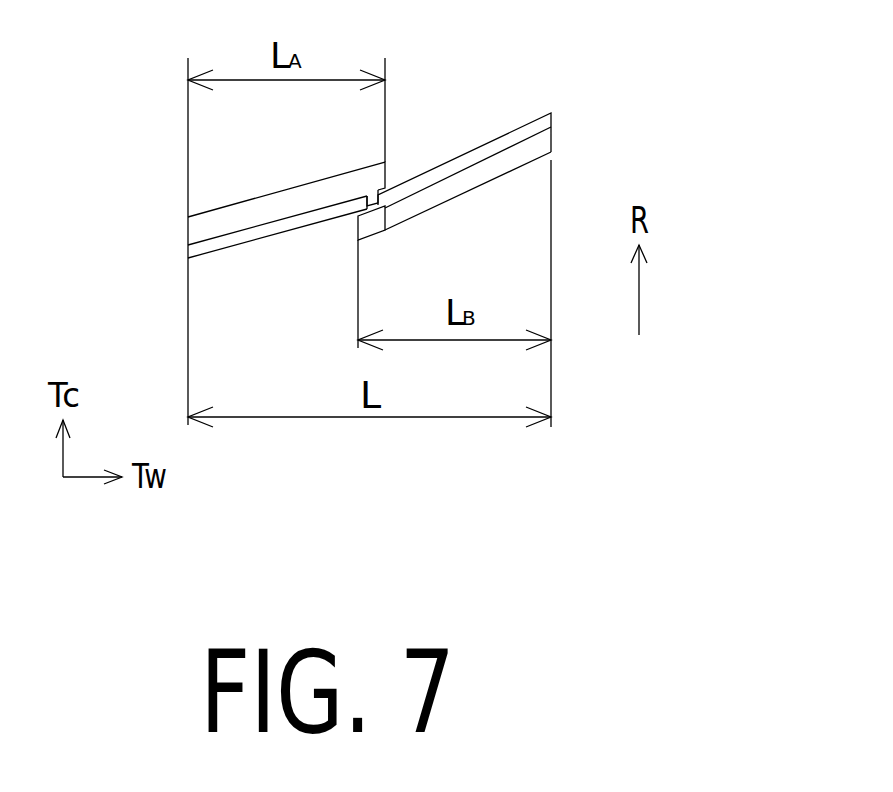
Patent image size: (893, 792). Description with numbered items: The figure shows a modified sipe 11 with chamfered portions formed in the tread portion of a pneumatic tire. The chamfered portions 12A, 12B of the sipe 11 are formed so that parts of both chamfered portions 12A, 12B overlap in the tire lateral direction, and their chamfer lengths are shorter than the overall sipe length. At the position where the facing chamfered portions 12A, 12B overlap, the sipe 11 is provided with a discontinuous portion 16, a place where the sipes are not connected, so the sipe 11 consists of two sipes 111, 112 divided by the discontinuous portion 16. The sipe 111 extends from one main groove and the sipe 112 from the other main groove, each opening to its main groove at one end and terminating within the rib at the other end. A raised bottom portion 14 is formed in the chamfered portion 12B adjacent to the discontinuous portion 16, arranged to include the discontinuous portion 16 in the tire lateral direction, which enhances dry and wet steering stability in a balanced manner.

The sipe 11 is at (369, 185).
The sipe 111 is at (286, 233).
The sipe 112 is at (464, 144).
The chamfered portion 12A is at (245, 220).
The chamfered portion 12B is at (513, 158).
The raised bottom portion 14 is at (376, 218).
The discontinuous portion 16 is at (372, 197).